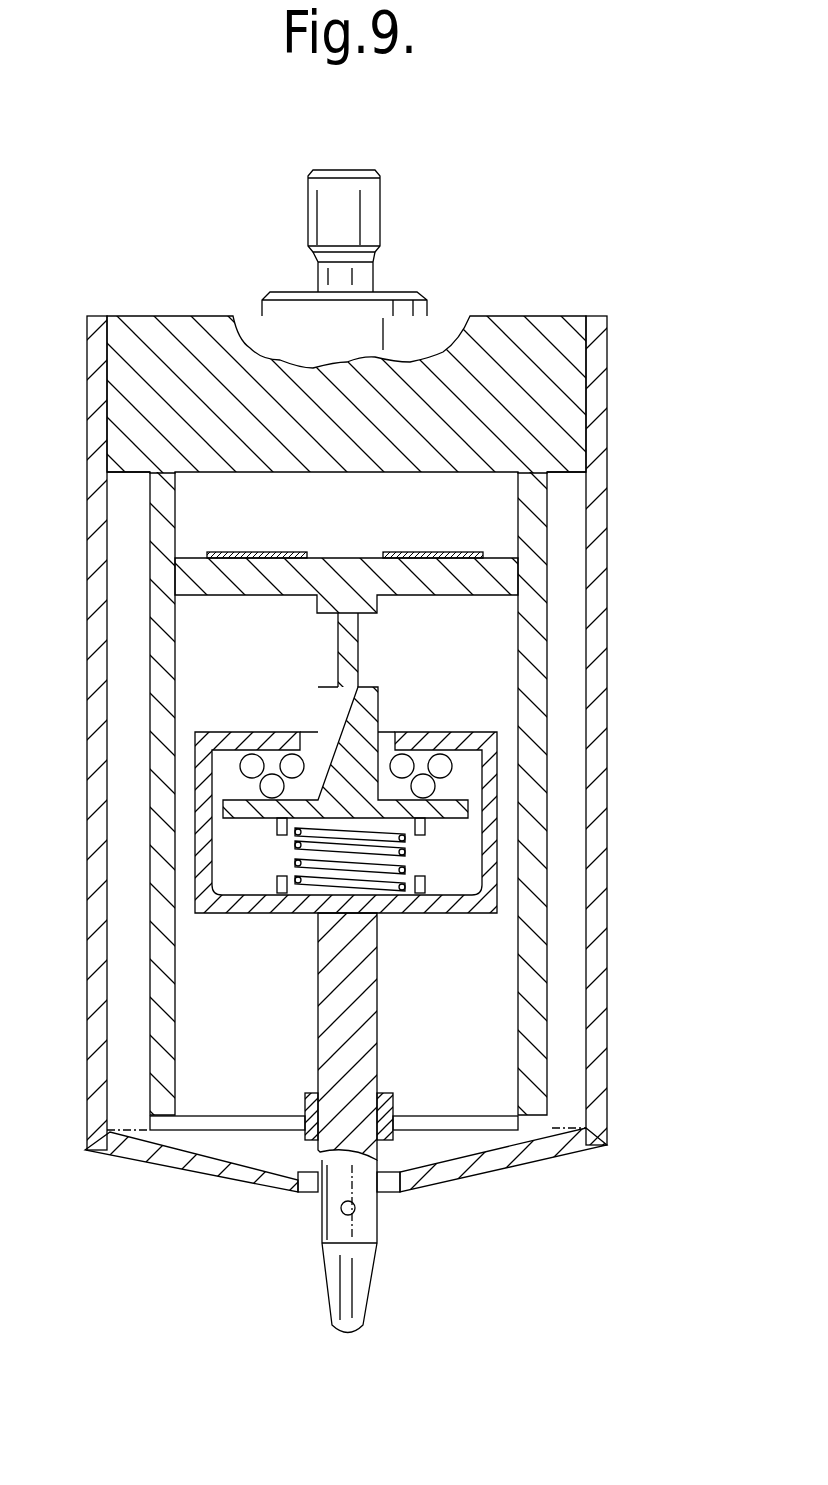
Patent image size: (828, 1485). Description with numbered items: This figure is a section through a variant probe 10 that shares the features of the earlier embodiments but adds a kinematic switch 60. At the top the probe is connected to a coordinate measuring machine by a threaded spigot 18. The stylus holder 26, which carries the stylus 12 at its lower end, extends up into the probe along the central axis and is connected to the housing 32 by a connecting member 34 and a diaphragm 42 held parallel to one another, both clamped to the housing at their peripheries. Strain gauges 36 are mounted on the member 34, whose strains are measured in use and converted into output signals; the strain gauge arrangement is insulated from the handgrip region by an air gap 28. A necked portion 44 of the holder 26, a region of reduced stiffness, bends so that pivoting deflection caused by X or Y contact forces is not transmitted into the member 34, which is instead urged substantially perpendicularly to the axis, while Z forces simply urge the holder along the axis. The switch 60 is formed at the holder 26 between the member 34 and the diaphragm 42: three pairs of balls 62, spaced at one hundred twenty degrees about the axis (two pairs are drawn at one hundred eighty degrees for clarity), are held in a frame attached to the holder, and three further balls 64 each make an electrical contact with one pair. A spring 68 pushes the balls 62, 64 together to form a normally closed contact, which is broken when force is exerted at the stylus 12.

The probe 10 is at (632, 1106).
The stylus 12 is at (360, 1295).
The threaded spigot 18 is at (372, 216).
The stylus holder 26 is at (357, 1147).
The air gap 28 is at (570, 767).
The housing 32 is at (558, 398).
The connecting member 34 is at (463, 573).
The strain gauges 36 is at (397, 552).
The diaphragm 42 is at (232, 1116).
The necked portion 44 is at (348, 643).
The kinematic switch 60 is at (310, 777).
The pairs of balls 62 is at (292, 766).
The further balls 64 is at (423, 786).
The spring 68 is at (413, 850).